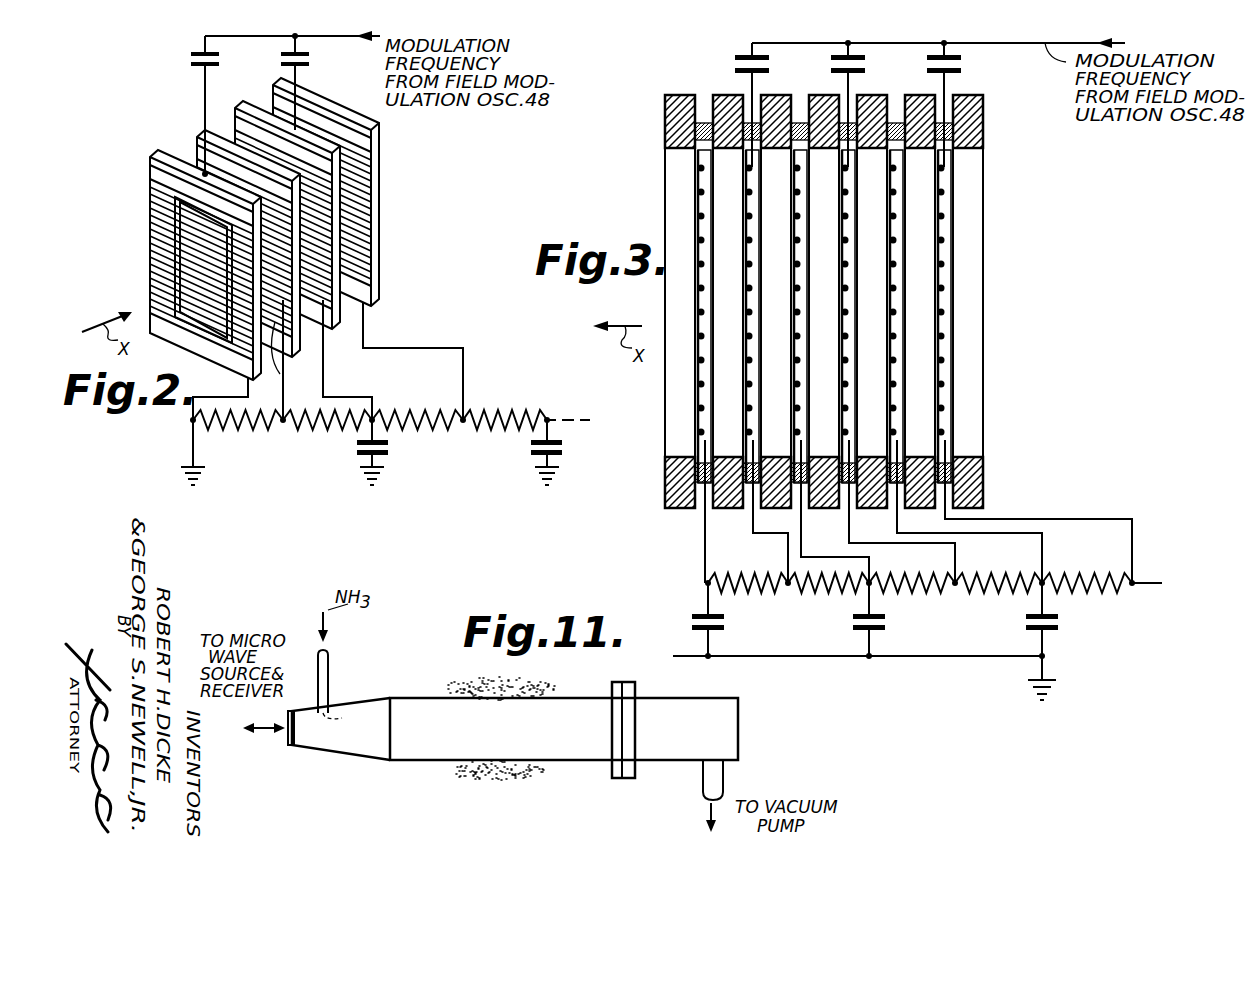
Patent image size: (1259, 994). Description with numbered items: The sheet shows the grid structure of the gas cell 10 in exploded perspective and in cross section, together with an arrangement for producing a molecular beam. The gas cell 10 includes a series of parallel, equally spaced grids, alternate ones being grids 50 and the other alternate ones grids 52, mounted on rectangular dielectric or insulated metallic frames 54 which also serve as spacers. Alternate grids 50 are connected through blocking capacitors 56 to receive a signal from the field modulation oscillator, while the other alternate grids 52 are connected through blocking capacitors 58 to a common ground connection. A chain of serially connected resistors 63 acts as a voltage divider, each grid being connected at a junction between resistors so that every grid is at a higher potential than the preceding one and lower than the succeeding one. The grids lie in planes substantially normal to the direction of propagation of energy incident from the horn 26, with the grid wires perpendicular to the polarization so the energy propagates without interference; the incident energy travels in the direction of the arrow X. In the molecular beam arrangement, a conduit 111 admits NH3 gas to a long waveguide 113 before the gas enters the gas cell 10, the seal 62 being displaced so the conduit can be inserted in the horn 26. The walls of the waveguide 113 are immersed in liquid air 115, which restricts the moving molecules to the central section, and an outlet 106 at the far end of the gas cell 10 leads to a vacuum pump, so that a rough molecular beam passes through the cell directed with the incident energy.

In FIG. 11, the gas cell 10 is at (749, 746).
In FIG. 11, the horn 26 is at (362, 758).
In FIG. 2, the alternate grids 50 is at (280, 374).
In FIG. 3, the alternate grids 50 is at (749, 218).
In FIG. 2, the other alternate grids 52 is at (150, 283).
In FIG. 3, the other alternate grids 52 is at (700, 168).
In FIG. 2, the rectangular dielectric or insulated metallic frames 54 is at (157, 152).
In FIG. 3, the rectangular dielectric or insulated metallic frames 54 is at (717, 96).
In FIG. 2, the blocking capacitors 56 is at (220, 58).
In FIG. 3, the blocking capacitors 56 is at (735, 57).
In FIG. 2, the blocking capacitors 58 is at (530, 446).
In FIG. 3, the blocking capacitors 58 is at (692, 617).
In FIG. 11, the seal 62 is at (292, 745).
In FIG. 2, the serially connected resistors 63 is at (298, 430).
In FIG. 3, the serially connected resistors 63 is at (845, 597).
In FIG. 11, the outlet 106 is at (704, 795).
In FIG. 11, the conduit 111 is at (330, 668).
In FIG. 11, the long waveguide 113 is at (425, 762).
In FIG. 11, the liquid air 115 is at (510, 680).